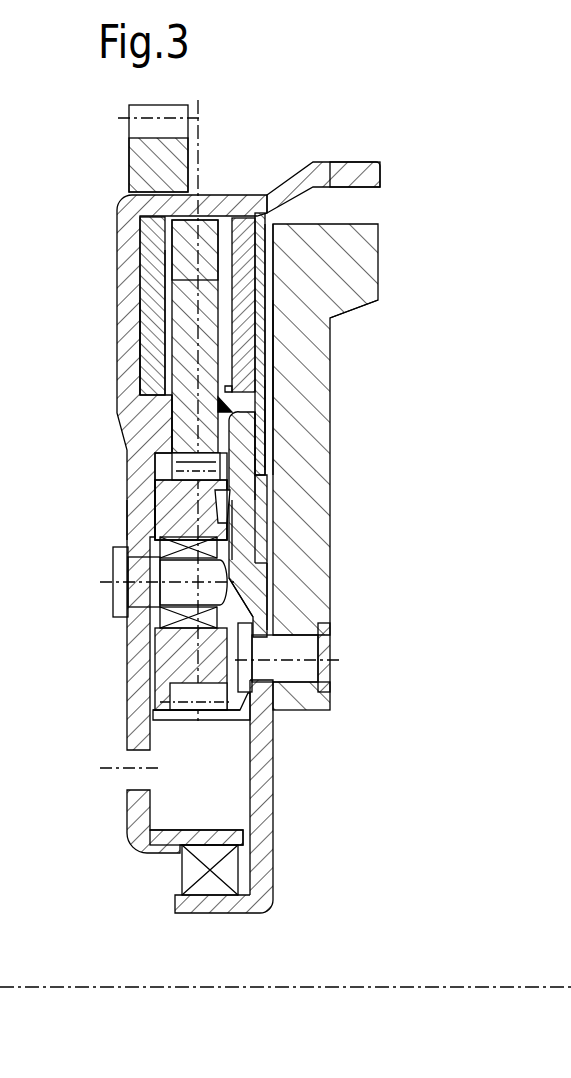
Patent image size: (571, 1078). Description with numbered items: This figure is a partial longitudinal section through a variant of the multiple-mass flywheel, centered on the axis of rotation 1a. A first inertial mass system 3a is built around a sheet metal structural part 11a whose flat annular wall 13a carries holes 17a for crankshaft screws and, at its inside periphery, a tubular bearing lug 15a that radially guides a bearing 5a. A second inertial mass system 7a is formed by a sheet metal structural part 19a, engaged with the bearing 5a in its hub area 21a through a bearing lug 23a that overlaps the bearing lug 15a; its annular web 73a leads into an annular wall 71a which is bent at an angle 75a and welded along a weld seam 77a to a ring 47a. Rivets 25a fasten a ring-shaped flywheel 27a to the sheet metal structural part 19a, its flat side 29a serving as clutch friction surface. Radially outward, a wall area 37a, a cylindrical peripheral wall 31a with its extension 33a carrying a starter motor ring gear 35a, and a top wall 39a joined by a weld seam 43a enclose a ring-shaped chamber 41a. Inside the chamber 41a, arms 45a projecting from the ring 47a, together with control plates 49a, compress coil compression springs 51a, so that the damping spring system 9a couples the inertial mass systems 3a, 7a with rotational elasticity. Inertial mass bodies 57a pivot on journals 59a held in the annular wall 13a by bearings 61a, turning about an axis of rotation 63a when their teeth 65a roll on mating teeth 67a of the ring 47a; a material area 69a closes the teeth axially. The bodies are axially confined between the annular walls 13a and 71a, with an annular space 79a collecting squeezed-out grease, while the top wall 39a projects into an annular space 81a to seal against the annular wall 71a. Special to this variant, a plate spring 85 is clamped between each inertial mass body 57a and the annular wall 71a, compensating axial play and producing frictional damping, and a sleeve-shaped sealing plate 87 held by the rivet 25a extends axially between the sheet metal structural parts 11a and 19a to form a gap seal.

The axis of rotation 1a is at (172, 990).
The inertial mass system 3a is at (115, 378).
The bearing 5a is at (190, 875).
The inertial mass system 7a is at (333, 545).
The damping spring system 9a is at (192, 300).
The sheet metal structural part 11a is at (127, 700).
The annular wall 13a is at (150, 518).
The bearing lug 15a is at (197, 835).
The holes 17a is at (140, 770).
The sheet metal structural part 19a is at (275, 762).
The hub area 21a is at (258, 824).
The bearing lug 23a is at (218, 903).
The rivet 25a is at (305, 662).
The flywheel 27a is at (310, 452).
The flat side 29a is at (333, 397).
The cylindrical peripheral wall 31a is at (237, 268).
The extension 33a is at (362, 175).
The starter motor ring gear 35a is at (147, 162).
The wall area 37a is at (180, 288).
The top wall 39a is at (262, 340).
The chamber 41a is at (190, 432).
The weld seam 43a is at (270, 215).
The arms 45a is at (200, 232).
The ring 47a is at (185, 446).
The control plates 49a is at (150, 230).
The coil compression springs 51a is at (140, 350).
The inertial mass bodies 57a is at (165, 660).
The journals 59a is at (145, 605).
The bearings 61a is at (165, 540).
The axis of rotation 63a is at (120, 575).
The teeth 65a is at (207, 703).
The mating teeth 67a is at (180, 468).
The material area 69a is at (178, 713).
The annular wall 71a is at (255, 540).
The annular web 73a is at (247, 608).
The angle 75a is at (258, 428).
The weld seam 77a is at (255, 378).
The annular space 79a is at (255, 478).
The annular space 81a is at (262, 590).
The plate spring 85 is at (247, 542).
The sleeve-shaped sealing plate 87 is at (177, 716).